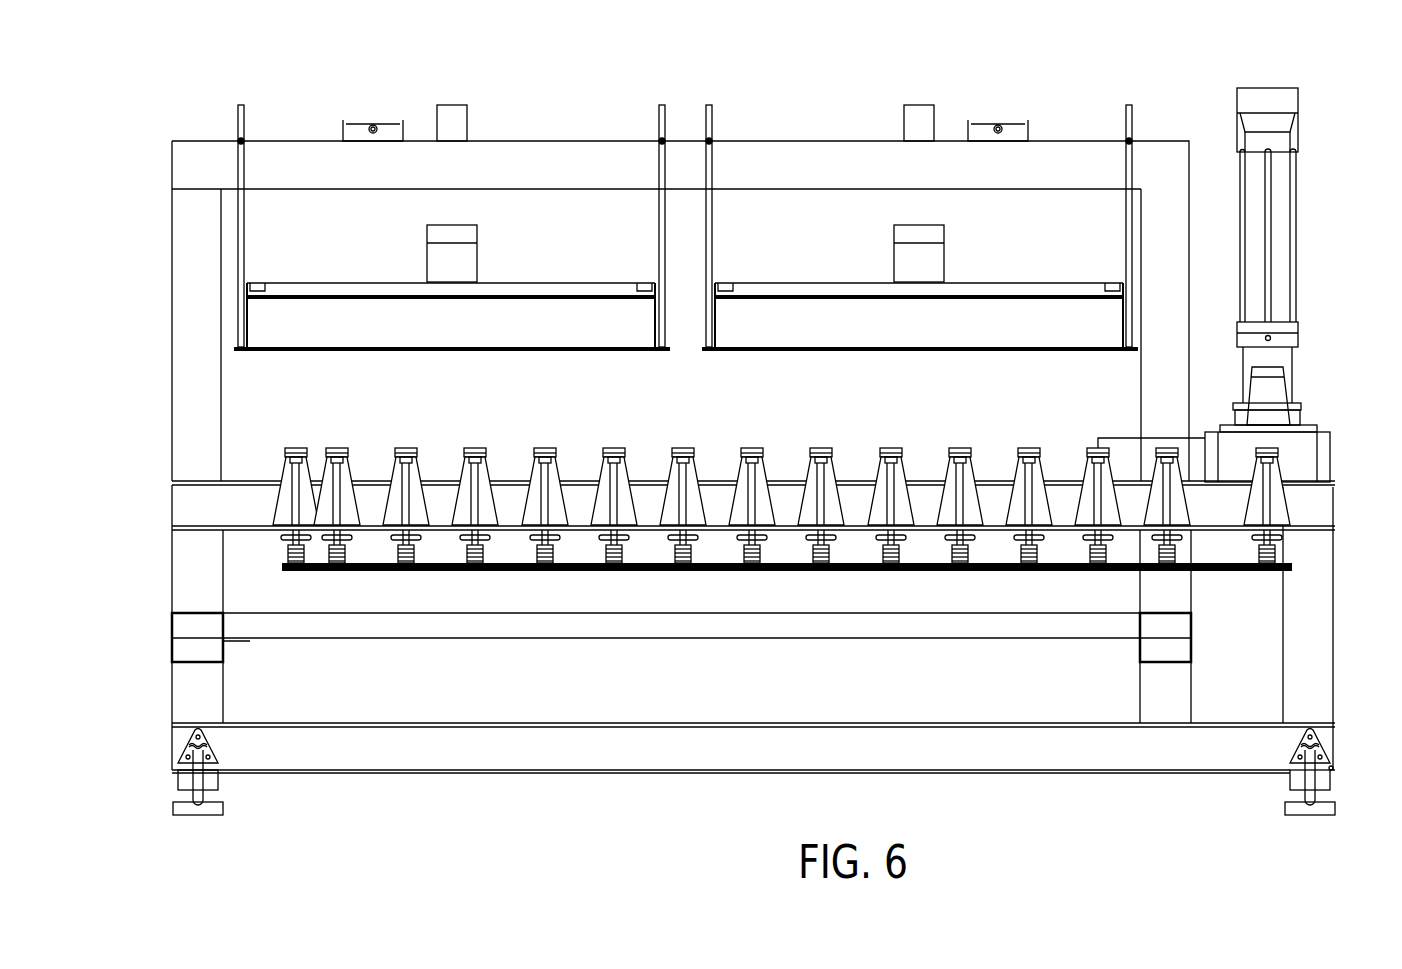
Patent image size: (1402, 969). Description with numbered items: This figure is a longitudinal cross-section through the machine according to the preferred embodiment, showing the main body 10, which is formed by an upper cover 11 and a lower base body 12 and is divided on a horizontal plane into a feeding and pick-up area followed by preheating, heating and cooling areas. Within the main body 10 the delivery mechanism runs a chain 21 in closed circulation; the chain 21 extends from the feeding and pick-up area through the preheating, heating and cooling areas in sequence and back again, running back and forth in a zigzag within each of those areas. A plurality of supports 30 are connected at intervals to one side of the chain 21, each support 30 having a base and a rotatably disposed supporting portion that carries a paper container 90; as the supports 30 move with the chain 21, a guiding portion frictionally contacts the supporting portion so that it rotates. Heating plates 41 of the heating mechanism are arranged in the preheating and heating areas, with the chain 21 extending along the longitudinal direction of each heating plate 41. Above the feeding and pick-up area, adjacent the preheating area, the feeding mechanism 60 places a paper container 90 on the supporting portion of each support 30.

The main body 10 is at (703, 478).
The cover 11 is at (192, 437).
The base body 12 is at (725, 650).
The chain 21 is at (435, 572).
The support 30 is at (533, 572).
The heating plate 41 is at (812, 288).
The feeding mechanism 60 is at (1296, 293).
The paper container 90 is at (1283, 505).